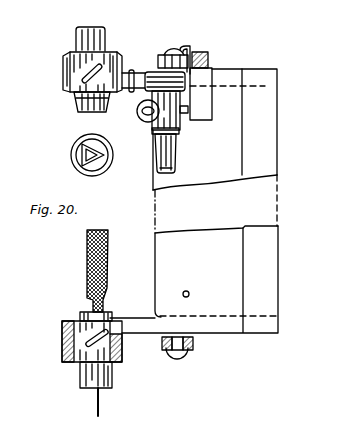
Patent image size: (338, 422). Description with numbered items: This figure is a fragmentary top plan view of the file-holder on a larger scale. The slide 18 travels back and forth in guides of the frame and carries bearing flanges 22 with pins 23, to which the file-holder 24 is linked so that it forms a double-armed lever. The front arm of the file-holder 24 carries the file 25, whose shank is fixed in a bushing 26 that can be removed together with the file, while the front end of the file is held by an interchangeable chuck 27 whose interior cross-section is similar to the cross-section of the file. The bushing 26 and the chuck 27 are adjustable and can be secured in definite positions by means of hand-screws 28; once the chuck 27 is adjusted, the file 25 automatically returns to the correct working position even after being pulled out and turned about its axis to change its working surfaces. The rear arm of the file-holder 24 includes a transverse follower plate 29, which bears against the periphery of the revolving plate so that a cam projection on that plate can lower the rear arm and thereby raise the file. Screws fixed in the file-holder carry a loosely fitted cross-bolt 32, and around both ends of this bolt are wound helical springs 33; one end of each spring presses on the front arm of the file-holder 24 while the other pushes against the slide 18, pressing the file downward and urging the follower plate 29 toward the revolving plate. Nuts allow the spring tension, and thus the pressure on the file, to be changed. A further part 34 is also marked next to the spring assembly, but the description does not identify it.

The slide 18 is at (208, 60).
The bearing flanges 22 is at (195, 343).
The pins 23 is at (183, 352).
The file-holder 24 is at (194, 279).
The file 25 is at (106, 253).
The bushing 26 is at (113, 373).
The chuck 27 is at (74, 37).
The hand-screws 28 is at (84, 78).
The follower plate 29 is at (268, 129).
The cross-bolt 32 is at (166, 157).
The helical springs 33 is at (160, 74).
The knob 34 is at (147, 117).